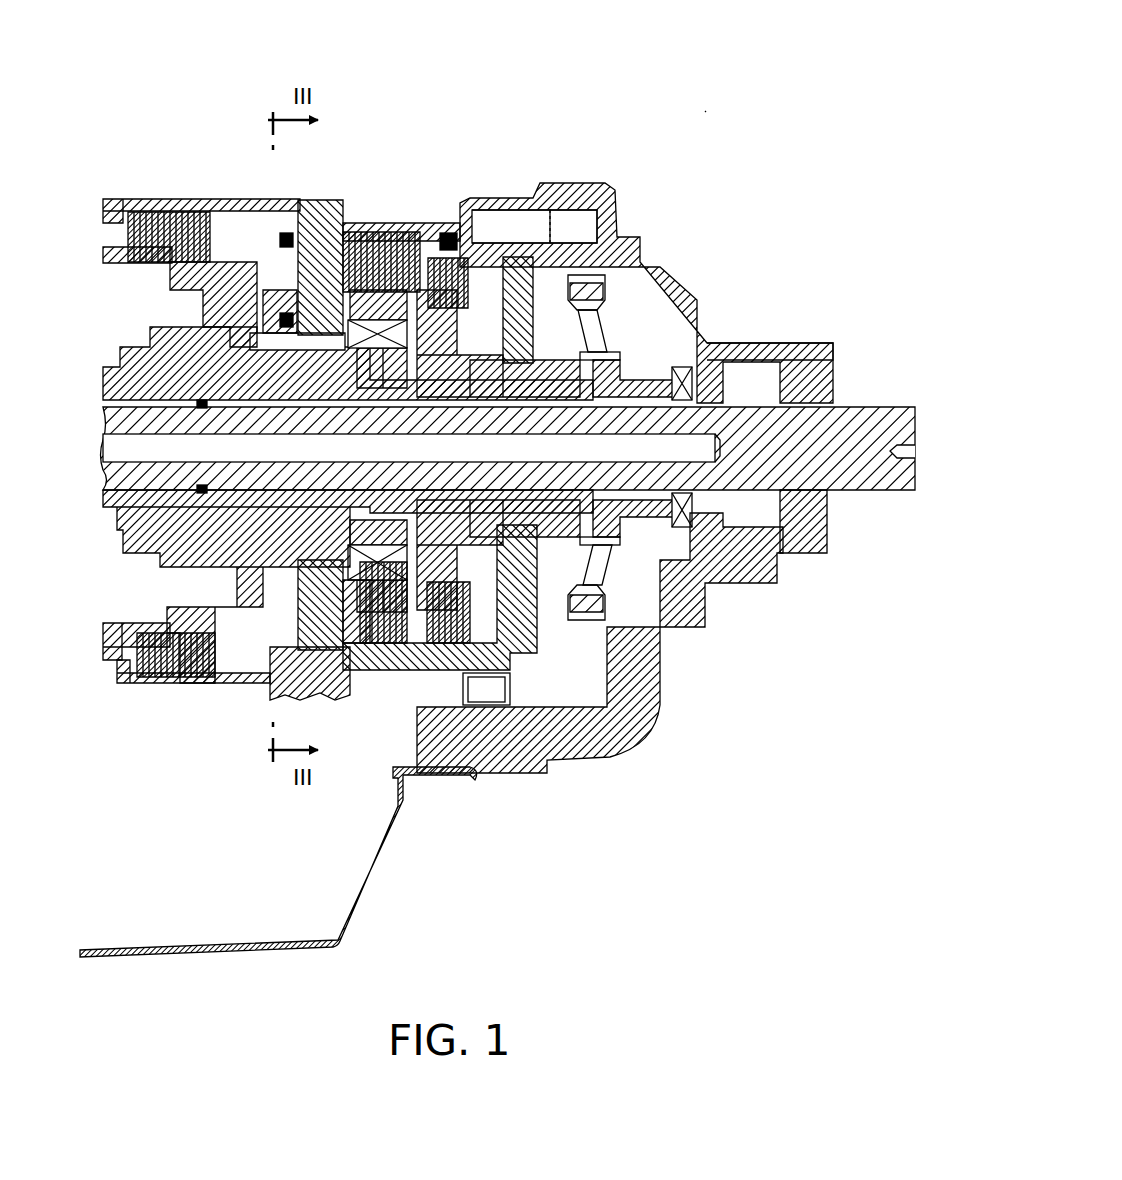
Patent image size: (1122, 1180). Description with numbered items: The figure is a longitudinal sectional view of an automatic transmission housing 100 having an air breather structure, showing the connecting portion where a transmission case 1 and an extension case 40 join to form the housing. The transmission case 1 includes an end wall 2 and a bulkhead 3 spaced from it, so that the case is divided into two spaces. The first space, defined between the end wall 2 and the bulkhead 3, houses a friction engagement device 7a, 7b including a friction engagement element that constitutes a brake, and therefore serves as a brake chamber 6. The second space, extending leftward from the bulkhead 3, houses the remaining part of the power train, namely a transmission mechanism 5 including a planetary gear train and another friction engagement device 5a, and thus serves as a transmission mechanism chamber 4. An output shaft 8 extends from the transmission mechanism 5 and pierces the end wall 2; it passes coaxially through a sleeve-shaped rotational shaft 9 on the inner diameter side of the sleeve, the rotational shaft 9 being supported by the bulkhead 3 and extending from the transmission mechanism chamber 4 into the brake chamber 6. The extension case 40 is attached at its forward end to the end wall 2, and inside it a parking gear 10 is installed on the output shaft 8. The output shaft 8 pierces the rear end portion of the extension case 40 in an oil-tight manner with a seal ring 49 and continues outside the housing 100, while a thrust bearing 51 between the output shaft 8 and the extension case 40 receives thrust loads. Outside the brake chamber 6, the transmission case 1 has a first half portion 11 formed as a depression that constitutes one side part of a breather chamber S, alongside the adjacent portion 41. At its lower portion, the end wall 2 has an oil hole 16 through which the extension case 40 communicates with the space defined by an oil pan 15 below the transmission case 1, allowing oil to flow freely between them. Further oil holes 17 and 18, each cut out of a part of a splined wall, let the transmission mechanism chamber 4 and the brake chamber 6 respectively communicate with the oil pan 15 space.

The automatic transmission housing 100 is at (705, 112).
The transmission case 1 is at (352, 196).
The end wall 2 is at (535, 575).
The bulkhead 3 is at (300, 198).
The transmission mechanism chamber 4 is at (236, 222).
The transmission mechanism 5 is at (116, 550).
The friction engagement device 5a is at (143, 690).
The brake chamber 6 is at (447, 200).
The friction engagement device 7a is at (355, 655).
The friction engagement device 7b is at (430, 642).
The output shaft 8 is at (875, 403).
The rotational shaft 9 is at (104, 382).
The parking gear 10 is at (602, 325).
The first half portion 11 is at (515, 200).
The cover chamber 41 is at (570, 188).
The breather chamber S is at (620, 133).
The oil pan 15 is at (385, 848).
The oil hole 16 is at (500, 690).
The oil hole 17 is at (196, 688).
The oil hole 18 is at (407, 668).
The extension case 40 is at (790, 338).
The seal ring 49 is at (832, 518).
The thrust bearing 51 is at (675, 522).